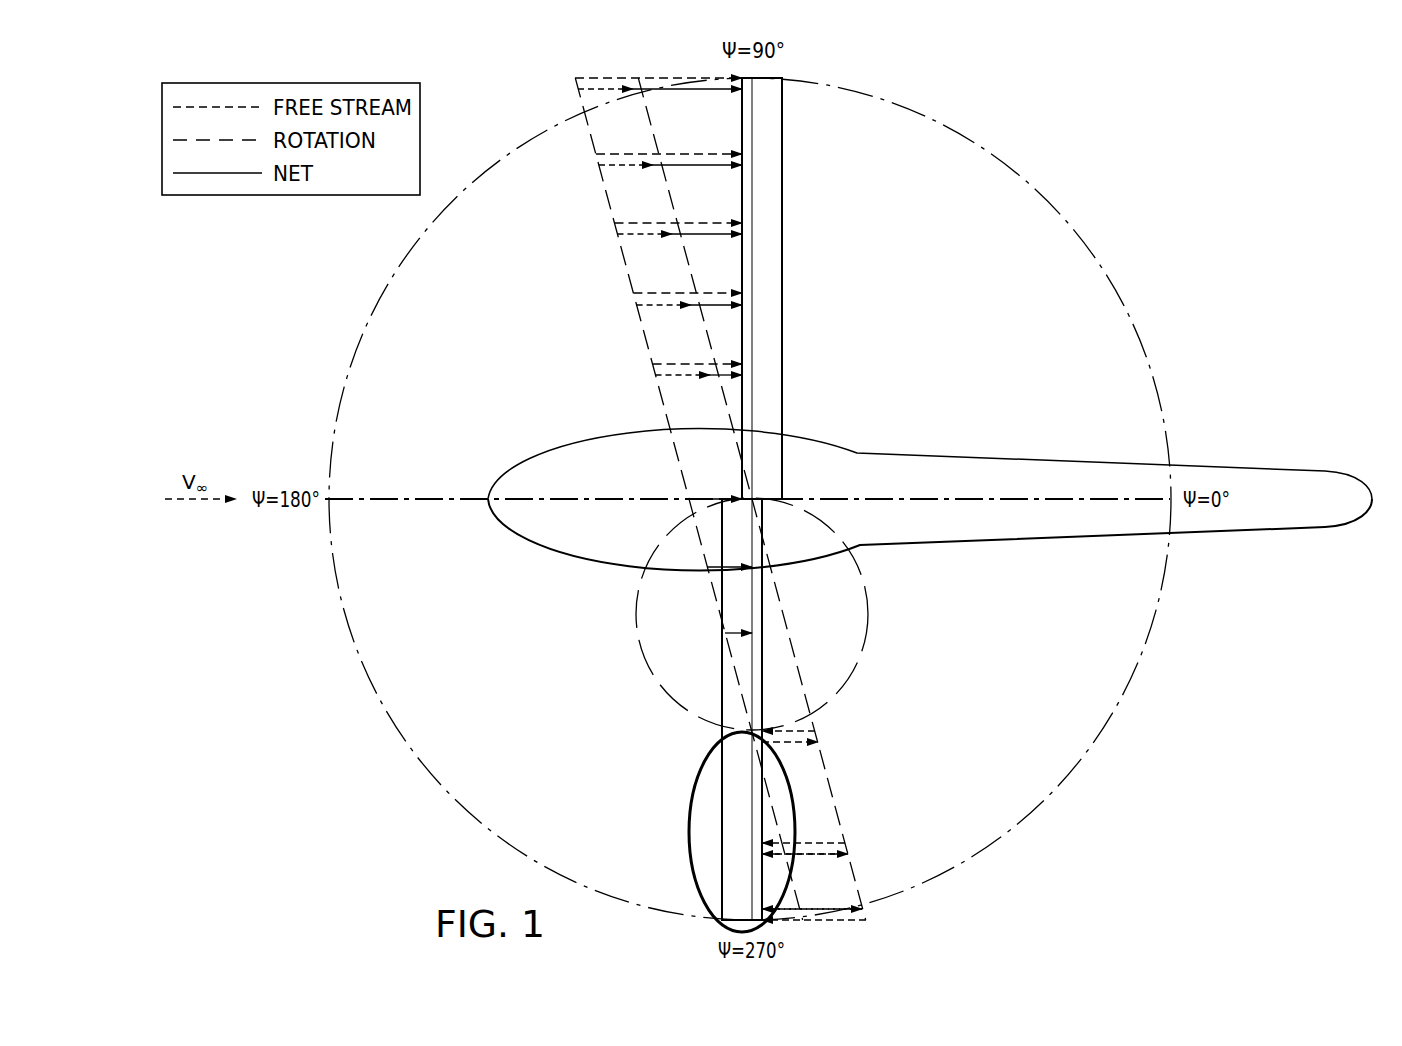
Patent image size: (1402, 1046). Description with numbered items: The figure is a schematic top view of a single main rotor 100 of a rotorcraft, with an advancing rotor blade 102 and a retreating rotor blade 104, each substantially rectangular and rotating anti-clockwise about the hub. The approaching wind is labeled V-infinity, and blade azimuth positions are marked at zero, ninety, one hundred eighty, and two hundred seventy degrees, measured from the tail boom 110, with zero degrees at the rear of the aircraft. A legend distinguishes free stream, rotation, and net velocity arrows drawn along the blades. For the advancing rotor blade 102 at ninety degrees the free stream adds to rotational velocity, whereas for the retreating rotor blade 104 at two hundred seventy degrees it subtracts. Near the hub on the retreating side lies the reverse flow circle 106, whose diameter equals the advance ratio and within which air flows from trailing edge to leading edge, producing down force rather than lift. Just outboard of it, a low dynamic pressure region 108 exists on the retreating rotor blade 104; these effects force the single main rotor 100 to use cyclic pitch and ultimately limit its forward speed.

The single main rotor 100 is at (997, 90).
The advancing rotor blade 102 is at (783, 203).
The retreating rotor blade 104 is at (722, 736).
The reverse flow circle 106 is at (862, 645).
The low dynamic pressure region 108 is at (690, 826).
The tail boom 110 is at (1005, 456).